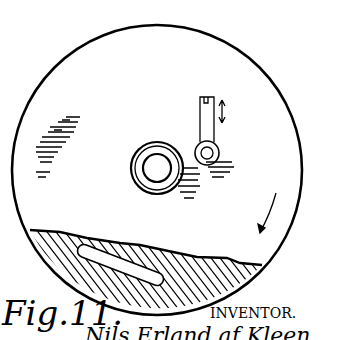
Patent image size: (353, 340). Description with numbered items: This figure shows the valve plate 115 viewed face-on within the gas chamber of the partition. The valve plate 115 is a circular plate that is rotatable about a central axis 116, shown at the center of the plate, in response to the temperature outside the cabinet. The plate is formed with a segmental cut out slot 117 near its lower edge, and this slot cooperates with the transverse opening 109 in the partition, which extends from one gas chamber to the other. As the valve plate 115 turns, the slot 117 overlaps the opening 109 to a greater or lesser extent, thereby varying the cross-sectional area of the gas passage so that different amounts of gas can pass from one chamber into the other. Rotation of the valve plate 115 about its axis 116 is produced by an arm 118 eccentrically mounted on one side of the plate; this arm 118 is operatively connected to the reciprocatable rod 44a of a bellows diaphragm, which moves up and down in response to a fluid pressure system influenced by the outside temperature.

The valve plate 115 is at (263, 83).
The central axis 116 is at (152, 161).
The reciprocatable rod 44a is at (200, 114).
The arm 118 is at (219, 152).
The segmental cut out slot 117 is at (141, 270).
The transverse opening 109 is at (111, 253).